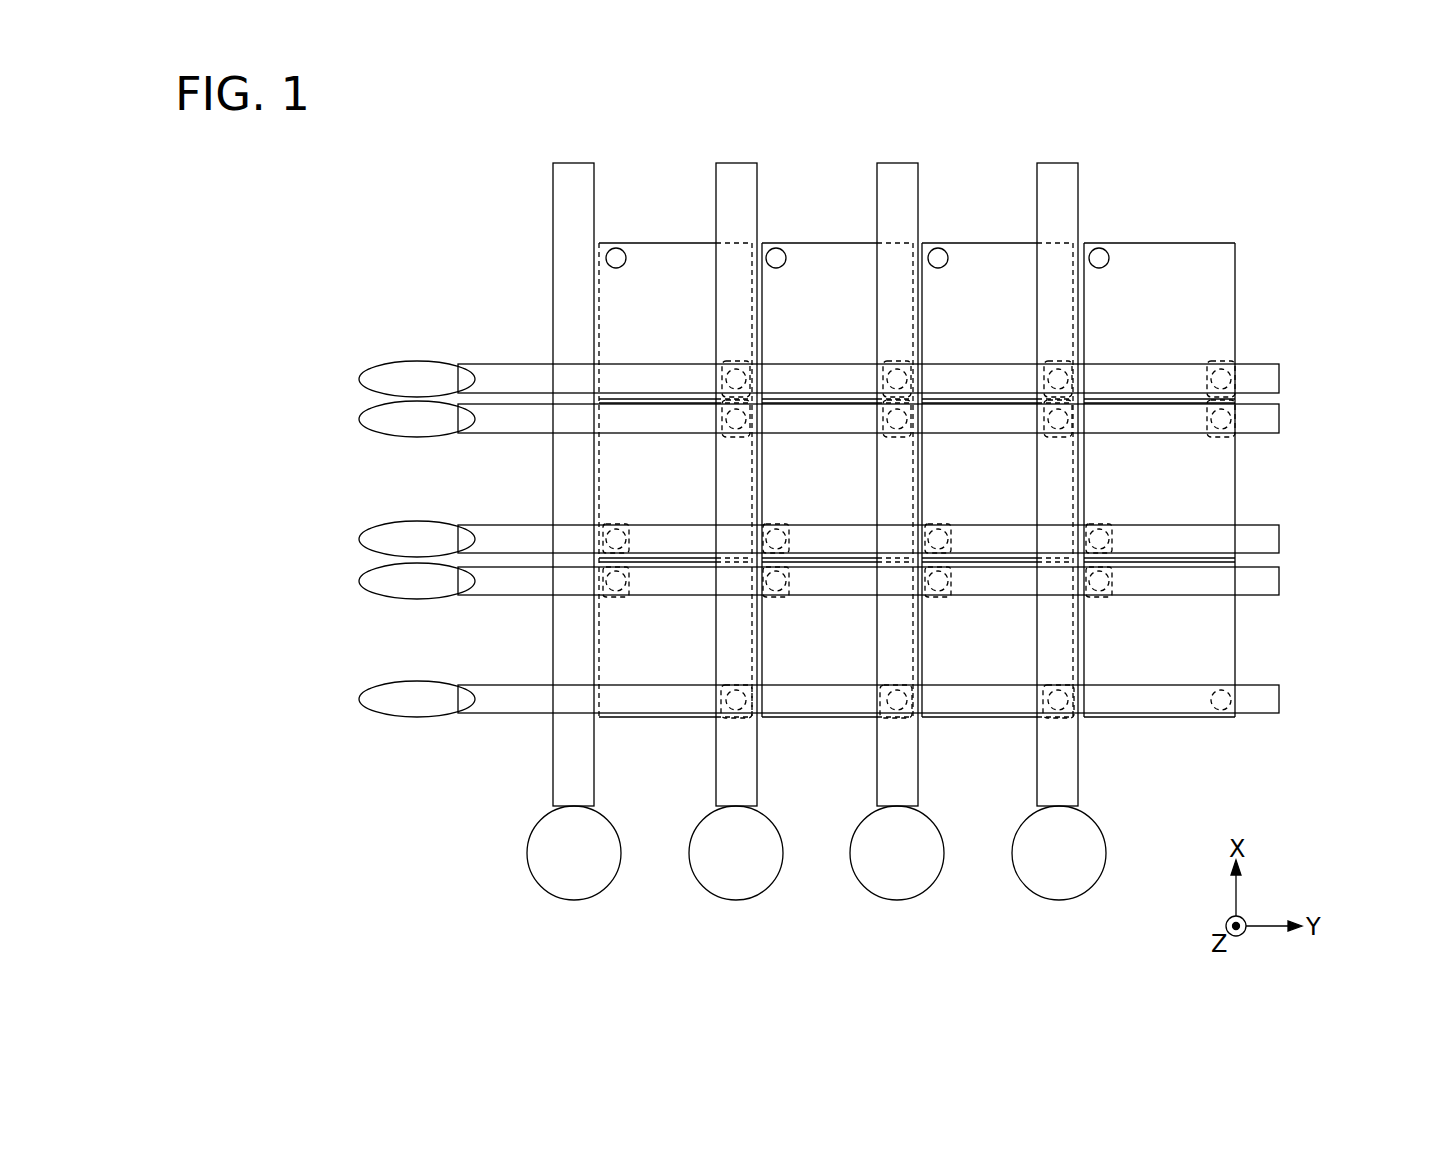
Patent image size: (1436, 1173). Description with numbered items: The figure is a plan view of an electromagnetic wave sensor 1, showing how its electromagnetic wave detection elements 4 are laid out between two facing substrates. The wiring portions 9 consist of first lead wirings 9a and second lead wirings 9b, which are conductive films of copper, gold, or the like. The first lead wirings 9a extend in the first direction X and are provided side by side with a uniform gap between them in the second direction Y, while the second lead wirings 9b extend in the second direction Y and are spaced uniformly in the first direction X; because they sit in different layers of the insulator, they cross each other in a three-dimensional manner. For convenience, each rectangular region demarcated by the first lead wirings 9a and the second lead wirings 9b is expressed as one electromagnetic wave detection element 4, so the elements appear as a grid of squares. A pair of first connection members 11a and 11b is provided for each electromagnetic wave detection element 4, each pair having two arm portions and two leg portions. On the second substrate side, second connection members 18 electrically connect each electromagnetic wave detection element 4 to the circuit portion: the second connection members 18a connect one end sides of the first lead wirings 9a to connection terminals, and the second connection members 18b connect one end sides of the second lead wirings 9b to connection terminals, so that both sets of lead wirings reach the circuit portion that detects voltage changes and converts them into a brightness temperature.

The electromagnetic wave sensor 1 is at (1229, 157).
The electromagnetic wave detection element 4 is at (986, 258).
The wiring portion 9 is at (928, 437).
The first lead wiring 9a is at (1058, 178).
The second lead wiring 9b is at (1267, 378).
The first connection member 11a is at (726, 419).
The first connection member 11b is at (616, 247).
The second connection member 18 is at (659, 673).
The second connection member 18a is at (1059, 878).
The second connection member 18b is at (372, 418).